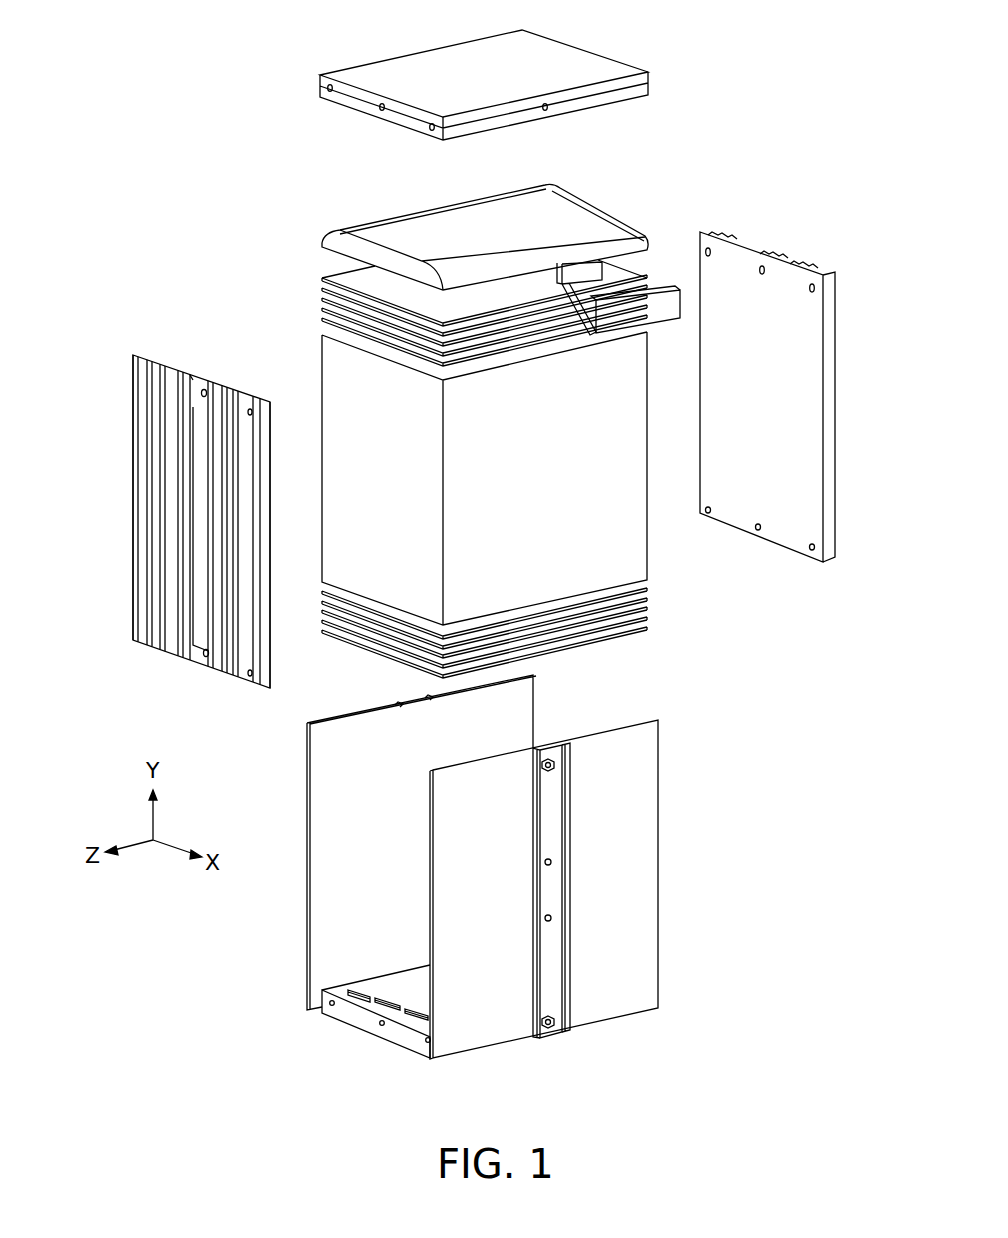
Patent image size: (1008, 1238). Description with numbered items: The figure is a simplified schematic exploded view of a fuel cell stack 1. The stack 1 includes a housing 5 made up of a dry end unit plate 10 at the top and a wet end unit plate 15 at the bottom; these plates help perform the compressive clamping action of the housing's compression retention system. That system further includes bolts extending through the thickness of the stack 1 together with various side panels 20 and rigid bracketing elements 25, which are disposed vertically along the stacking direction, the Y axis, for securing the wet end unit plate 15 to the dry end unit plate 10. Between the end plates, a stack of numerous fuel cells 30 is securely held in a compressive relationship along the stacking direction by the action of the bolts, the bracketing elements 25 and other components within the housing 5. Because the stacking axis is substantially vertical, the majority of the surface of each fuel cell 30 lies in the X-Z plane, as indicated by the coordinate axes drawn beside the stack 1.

The stack 1 is at (202, 133).
The housing 5 is at (813, 682).
The dry end unit plate 10 is at (452, 57).
The wet end unit plate 15 is at (353, 1015).
The side panels 20 is at (133, 493).
The rigid bracketing elements 25 is at (572, 933).
The fuel cells 30 is at (638, 557).